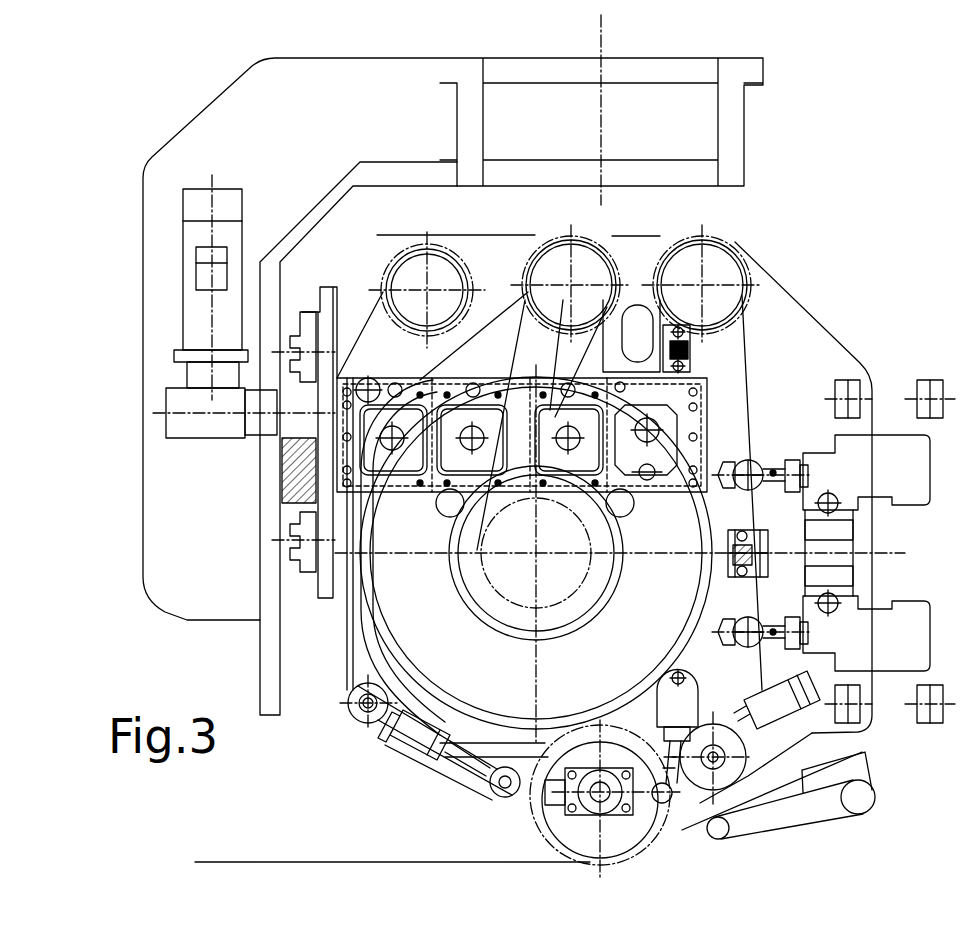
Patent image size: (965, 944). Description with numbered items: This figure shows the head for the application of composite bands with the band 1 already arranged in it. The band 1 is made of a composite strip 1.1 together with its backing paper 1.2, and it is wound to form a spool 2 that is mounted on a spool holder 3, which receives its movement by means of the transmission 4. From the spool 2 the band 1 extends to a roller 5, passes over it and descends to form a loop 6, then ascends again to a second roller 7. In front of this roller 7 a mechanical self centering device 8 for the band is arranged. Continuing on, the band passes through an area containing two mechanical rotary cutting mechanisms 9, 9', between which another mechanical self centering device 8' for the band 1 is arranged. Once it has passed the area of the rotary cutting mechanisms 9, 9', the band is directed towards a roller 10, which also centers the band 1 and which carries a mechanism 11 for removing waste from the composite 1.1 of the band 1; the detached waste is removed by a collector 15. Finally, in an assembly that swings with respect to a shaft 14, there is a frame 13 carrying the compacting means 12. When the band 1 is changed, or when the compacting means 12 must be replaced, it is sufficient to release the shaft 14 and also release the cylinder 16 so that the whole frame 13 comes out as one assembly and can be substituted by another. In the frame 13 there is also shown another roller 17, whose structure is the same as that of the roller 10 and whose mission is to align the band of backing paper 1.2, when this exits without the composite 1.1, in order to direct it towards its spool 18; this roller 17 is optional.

The band 1 is at (750, 363).
The composite strip 1.1 is at (318, 862).
The backing paper 1.2 is at (353, 655).
The spool 2 is at (400, 613).
The spool holder 3 is at (503, 613).
The transmission 4 is at (475, 527).
The roller 5 is at (557, 268).
The loop 6 is at (622, 335).
The second roller 7 is at (718, 268).
The mechanical self centering device 8 is at (731, 295).
The mechanical self centering device 8' is at (748, 570).
The mechanical rotary cutting mechanism 9 is at (762, 438).
The mechanical rotary cutting mechanism 9' is at (762, 646).
The roller 10 is at (725, 735).
The mechanism for removing waste 11 is at (680, 832).
The compacting means 12 is at (600, 858).
The frame 13 is at (515, 808).
The shaft 14 is at (358, 718).
The collector 15 is at (790, 812).
The cylinder 16 is at (667, 707).
The roller 17 is at (497, 790).
The spool 18 is at (412, 277).